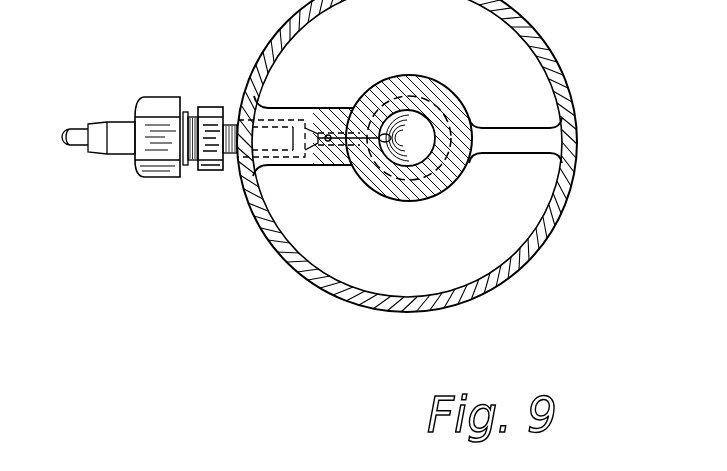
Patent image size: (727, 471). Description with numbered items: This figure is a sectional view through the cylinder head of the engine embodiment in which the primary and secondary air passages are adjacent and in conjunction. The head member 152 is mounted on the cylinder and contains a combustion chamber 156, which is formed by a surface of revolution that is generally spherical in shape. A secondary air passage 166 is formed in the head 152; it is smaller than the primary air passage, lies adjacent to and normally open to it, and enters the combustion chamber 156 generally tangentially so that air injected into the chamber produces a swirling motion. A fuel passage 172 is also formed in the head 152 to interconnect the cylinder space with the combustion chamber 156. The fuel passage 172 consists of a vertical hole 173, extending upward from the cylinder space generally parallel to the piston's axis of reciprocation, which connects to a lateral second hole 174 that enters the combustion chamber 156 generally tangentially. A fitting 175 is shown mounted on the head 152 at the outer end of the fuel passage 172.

The head member 152 is at (567, 82).
The combustion chamber 156 is at (420, 140).
The secondary air passage 166 is at (386, 141).
The fuel passage 172 is at (328, 125).
The vertical hole 173 is at (328, 143).
The lateral second hole 174 is at (434, 180).
The fitting 175 is at (151, 94).